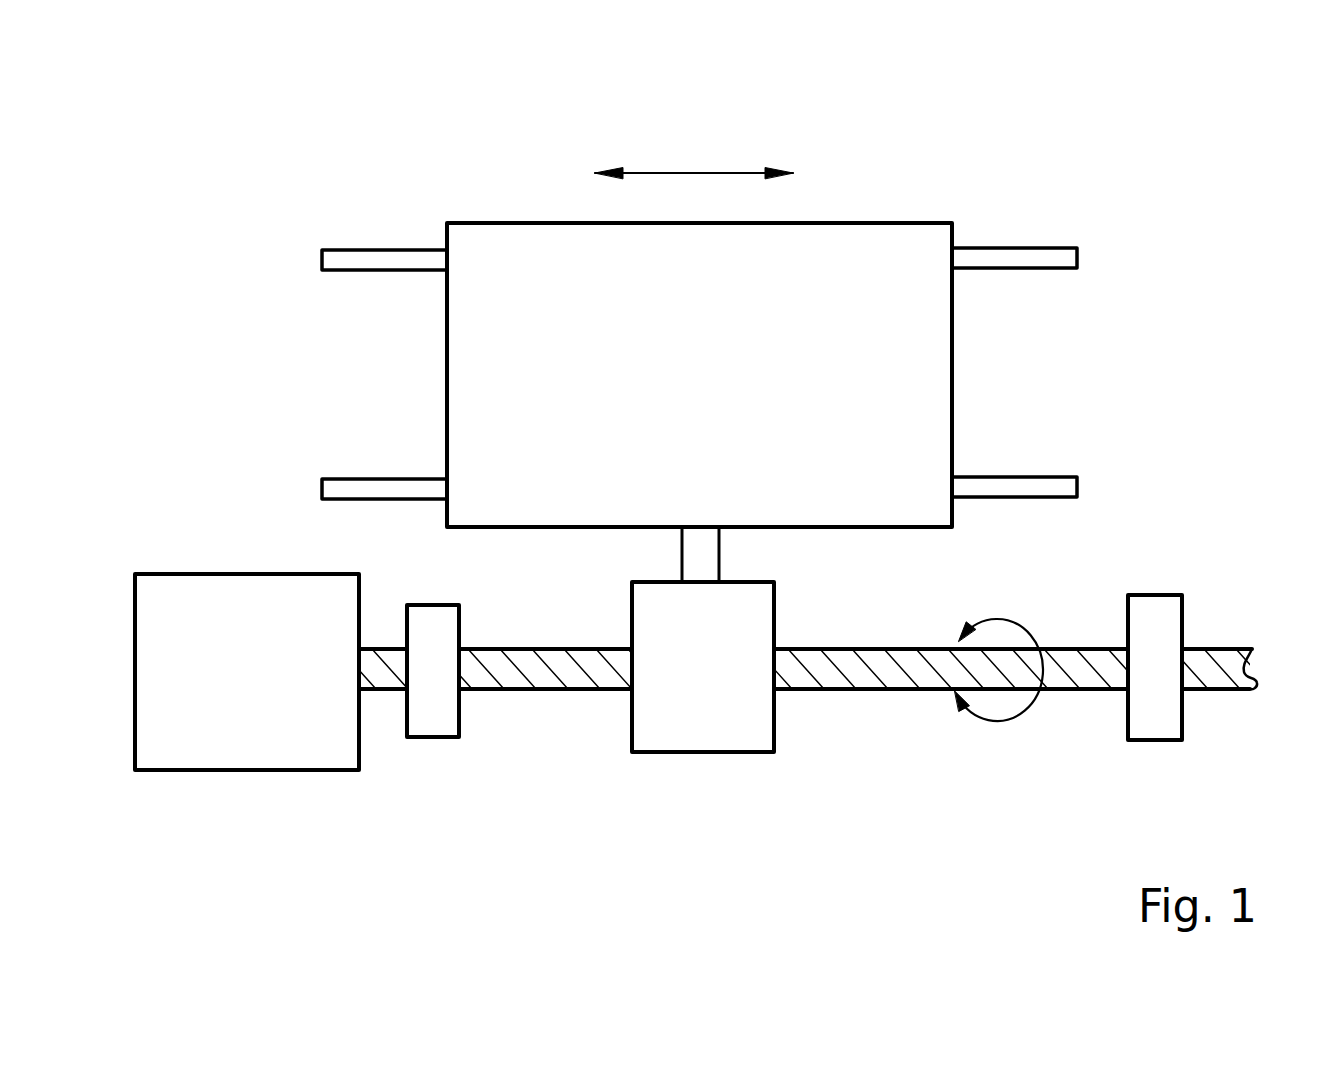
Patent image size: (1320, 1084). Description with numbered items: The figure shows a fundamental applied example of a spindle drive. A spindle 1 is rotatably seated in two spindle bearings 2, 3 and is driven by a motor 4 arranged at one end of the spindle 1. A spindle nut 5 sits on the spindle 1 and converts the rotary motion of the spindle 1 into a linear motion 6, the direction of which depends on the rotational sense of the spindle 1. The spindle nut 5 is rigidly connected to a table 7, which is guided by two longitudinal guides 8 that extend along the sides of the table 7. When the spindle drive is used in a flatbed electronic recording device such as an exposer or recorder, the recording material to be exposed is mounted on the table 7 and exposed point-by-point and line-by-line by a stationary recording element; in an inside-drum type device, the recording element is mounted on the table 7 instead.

The spindle 1 is at (557, 677).
The spindle bearing 2 is at (430, 713).
The spindle bearing 3 is at (1161, 612).
The motor 4 is at (231, 730).
The spindle nut 5 is at (735, 738).
The linear motion 6 is at (683, 172).
The table 7 is at (947, 424).
The guide rails 8 is at (322, 272).